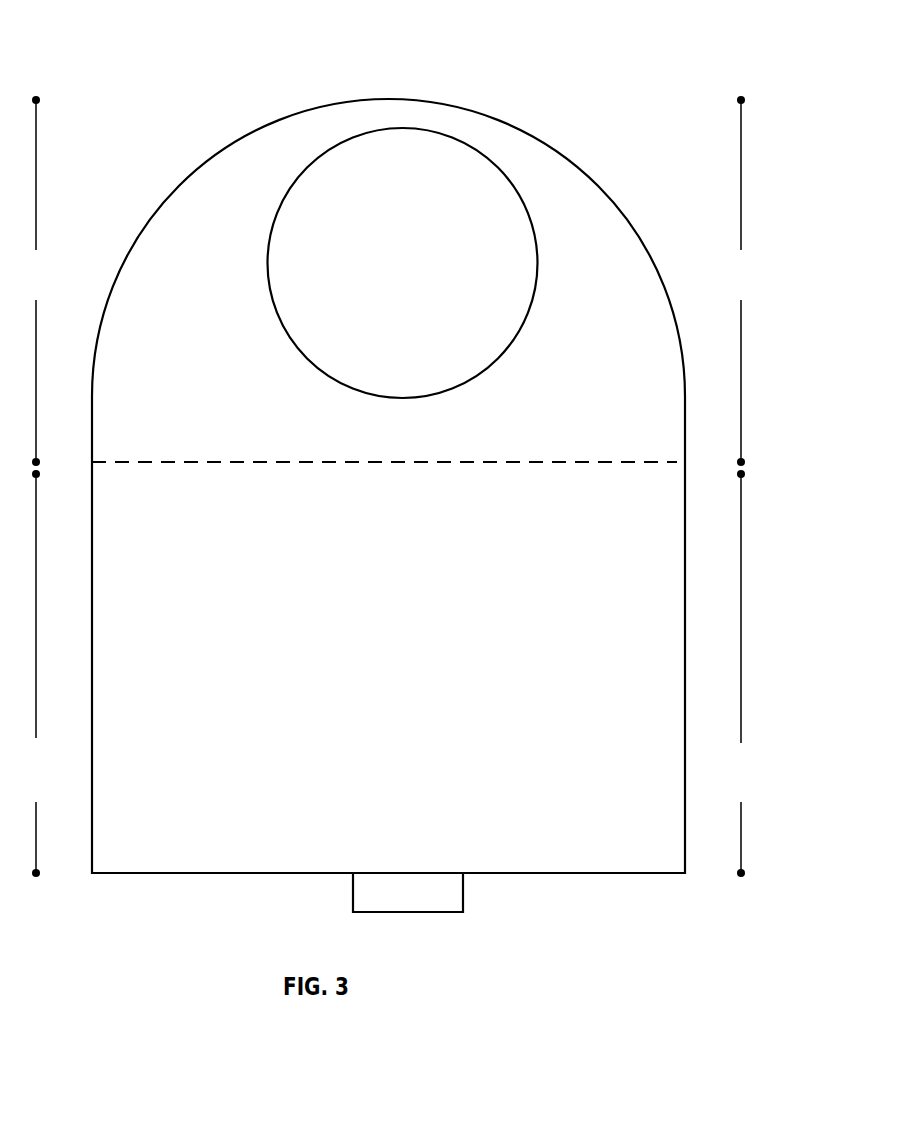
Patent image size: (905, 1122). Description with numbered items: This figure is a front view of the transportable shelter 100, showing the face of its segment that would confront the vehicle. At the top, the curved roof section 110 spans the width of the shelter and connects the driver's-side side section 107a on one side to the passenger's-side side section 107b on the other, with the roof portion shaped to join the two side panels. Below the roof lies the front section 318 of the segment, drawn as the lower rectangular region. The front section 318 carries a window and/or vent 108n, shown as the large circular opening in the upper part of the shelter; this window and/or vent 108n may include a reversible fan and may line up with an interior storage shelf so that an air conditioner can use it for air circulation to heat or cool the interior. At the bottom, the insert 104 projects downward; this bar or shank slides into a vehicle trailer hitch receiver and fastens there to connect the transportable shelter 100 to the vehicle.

The transportable shelter 100 is at (167, 64).
The window and/or vent 108n is at (469, 135).
The roof portion 110 is at (388, 281).
The side section 107a is at (741, 673).
The side section 107b is at (36, 673).
The front section 318 is at (384, 520).
The insert 104 is at (408, 892).